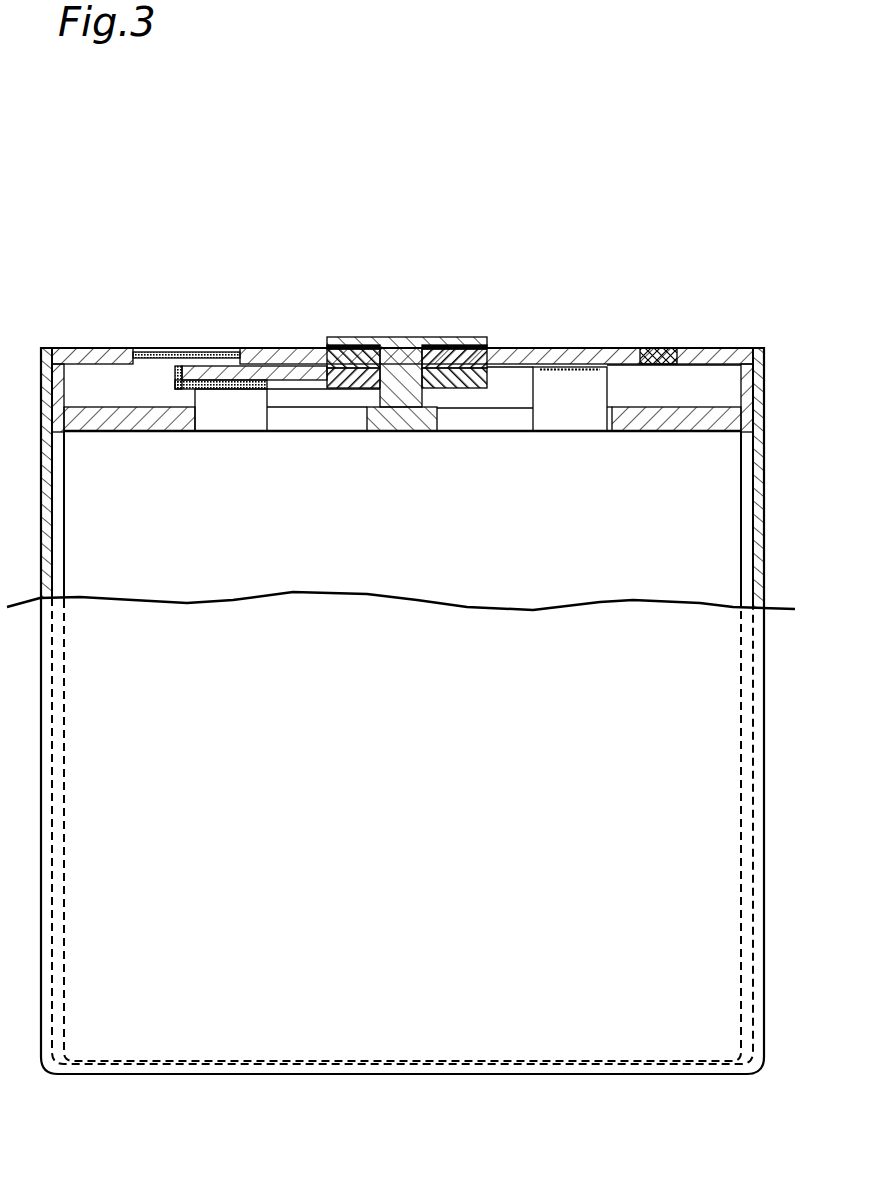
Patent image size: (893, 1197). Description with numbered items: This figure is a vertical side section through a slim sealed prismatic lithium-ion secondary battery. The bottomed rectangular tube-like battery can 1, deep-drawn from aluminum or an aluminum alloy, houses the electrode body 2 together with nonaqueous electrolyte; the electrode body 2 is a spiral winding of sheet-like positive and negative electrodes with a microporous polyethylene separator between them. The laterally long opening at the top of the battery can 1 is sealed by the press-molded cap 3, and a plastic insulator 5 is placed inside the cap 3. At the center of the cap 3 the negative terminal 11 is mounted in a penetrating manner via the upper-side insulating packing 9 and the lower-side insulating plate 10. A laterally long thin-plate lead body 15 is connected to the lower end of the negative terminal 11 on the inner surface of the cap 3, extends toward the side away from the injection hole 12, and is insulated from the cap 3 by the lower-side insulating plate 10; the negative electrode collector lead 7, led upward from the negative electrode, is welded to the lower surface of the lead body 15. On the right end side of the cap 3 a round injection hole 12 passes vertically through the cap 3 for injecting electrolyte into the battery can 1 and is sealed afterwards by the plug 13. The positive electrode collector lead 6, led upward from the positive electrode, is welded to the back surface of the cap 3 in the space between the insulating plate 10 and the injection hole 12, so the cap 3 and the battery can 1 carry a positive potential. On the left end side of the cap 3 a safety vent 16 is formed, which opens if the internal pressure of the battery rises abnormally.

The battery can 1 is at (768, 698).
The electrode body 2 is at (697, 541).
The cap 3 is at (540, 350).
The insulator 5 is at (641, 432).
The positive electrode collector lead 6 is at (563, 405).
The negative electrode collector lead 7 is at (230, 405).
The upper-side insulating packing 9 is at (481, 345).
The lower-side insulating plate 10 is at (178, 385).
The negative terminal 11 is at (380, 338).
The injection hole 12 is at (668, 366).
The plug 13 is at (656, 350).
The lead body 15 is at (322, 390).
The safety vent 16 is at (175, 342).